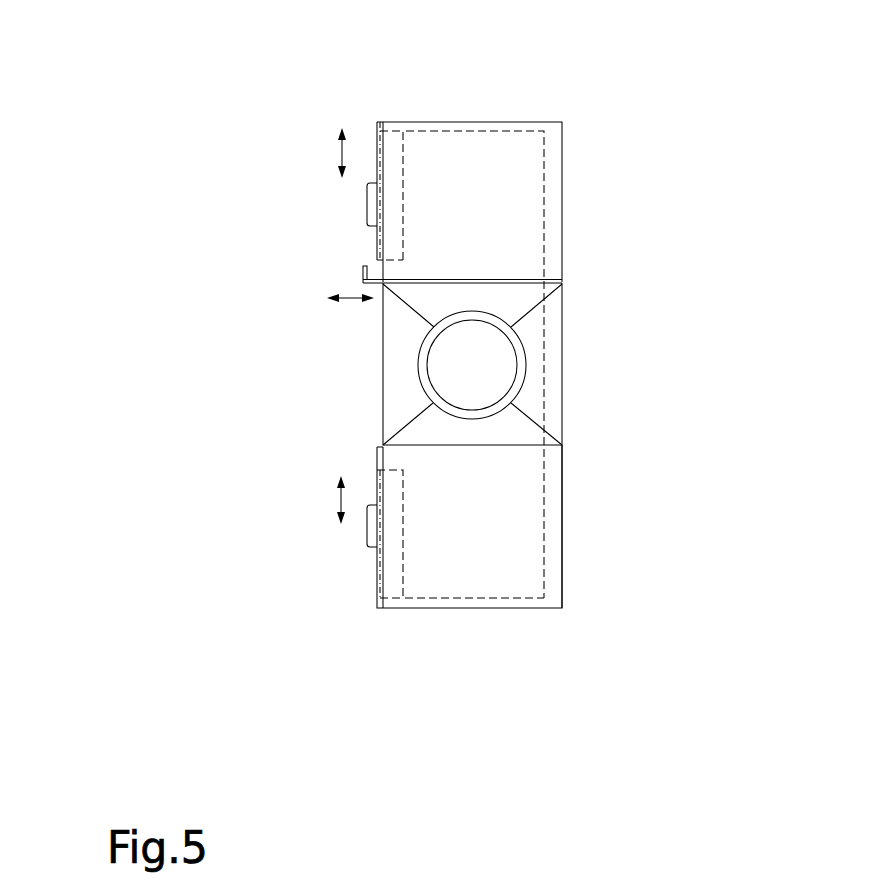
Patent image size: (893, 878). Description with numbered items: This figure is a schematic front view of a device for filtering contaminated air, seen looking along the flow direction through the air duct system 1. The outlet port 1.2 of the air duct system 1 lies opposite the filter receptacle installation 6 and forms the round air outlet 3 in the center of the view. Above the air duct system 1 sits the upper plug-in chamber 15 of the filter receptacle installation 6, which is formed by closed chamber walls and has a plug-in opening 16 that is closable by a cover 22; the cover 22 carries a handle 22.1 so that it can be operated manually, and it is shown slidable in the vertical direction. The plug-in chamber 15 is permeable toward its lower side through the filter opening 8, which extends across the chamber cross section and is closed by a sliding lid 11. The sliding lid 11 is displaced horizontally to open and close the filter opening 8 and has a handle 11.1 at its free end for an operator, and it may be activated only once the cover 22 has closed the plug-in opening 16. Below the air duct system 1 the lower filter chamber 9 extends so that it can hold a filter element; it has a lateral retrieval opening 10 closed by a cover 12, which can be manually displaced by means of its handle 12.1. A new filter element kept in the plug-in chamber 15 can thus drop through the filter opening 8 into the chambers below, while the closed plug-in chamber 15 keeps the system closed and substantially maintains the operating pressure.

The air duct system 1 is at (350, 358).
The outlet port 1.2 is at (533, 342).
The air outlet 3 is at (483, 377).
The filter receptacle installation 6 is at (573, 533).
The filter opening 8 is at (472, 288).
The lower filter chamber 9 is at (515, 558).
The retrieval opening 10 is at (389, 550).
The sliding lid 11 is at (510, 281).
The handle 11.1 is at (360, 273).
The cover 12 is at (375, 580).
The handle 12.1 is at (367, 532).
The upper plug-in chamber 15 is at (503, 205).
The plug-in opening 16 is at (392, 165).
The cover 22 is at (378, 133).
The handle 22.1 is at (367, 205).